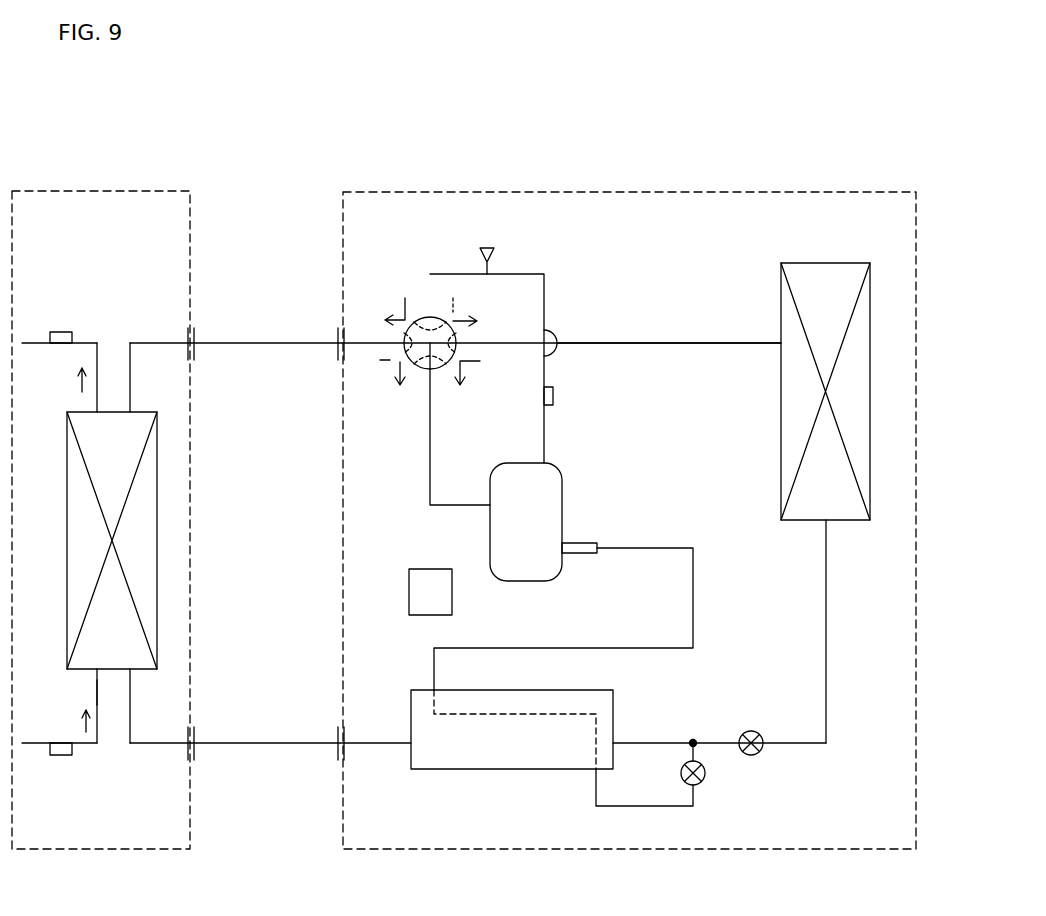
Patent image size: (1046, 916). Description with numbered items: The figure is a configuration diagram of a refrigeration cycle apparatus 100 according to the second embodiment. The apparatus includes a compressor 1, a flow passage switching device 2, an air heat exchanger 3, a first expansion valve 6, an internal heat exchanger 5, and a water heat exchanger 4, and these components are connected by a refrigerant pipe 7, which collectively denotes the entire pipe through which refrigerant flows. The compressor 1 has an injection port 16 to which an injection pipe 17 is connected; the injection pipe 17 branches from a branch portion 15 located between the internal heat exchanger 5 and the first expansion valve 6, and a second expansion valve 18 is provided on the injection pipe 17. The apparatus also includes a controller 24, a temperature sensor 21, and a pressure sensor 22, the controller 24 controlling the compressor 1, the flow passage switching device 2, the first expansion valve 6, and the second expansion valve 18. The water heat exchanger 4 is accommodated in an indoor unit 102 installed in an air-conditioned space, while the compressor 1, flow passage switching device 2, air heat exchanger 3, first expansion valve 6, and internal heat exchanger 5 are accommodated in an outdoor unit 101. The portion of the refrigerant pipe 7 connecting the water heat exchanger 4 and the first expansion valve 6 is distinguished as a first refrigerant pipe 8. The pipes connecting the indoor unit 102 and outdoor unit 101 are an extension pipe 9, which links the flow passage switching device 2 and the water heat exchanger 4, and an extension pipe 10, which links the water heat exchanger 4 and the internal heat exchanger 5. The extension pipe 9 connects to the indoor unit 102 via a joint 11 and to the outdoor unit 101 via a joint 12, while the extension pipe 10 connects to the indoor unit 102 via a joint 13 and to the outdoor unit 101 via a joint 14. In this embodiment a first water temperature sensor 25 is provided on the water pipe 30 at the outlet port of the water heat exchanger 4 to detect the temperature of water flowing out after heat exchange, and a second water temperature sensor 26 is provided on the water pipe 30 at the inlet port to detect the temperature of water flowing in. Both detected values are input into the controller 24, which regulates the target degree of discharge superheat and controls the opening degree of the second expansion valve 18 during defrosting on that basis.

The compressor 1 is at (562, 492).
The flow passage switching device 2 is at (420, 318).
The air heat exchanger 3 is at (870, 338).
The water heat exchanger 4 is at (157, 485).
The internal heat exchanger 5 is at (442, 770).
The first expansion valve 6 is at (760, 731).
The refrigerant pipe 7 is at (826, 587).
The first refrigerant pipe 8 is at (395, 745).
The extension pipe 9 is at (265, 343).
The extension pipe 10 is at (262, 745).
The joint 11 is at (188, 340).
The joint 12 is at (340, 342).
The joint 13 is at (188, 750).
The joint 14 is at (338, 750).
The branch portion 15 is at (697, 736).
The injection port 16 is at (597, 543).
The injection pipe 17 is at (693, 600).
The second expansion valve 18 is at (704, 778).
The temperature sensor 21 is at (553, 396).
The pressure sensor 22 is at (495, 254).
The controller 24 is at (409, 587).
The first water temperature sensor 25 is at (61, 332).
The second water temperature sensor 26 is at (61, 755).
The water pipe 30 is at (97, 694).
The refrigeration cycle apparatus 100 is at (240, 198).
The outdoor unit 101 is at (677, 192).
The indoor unit 102 is at (43, 192).